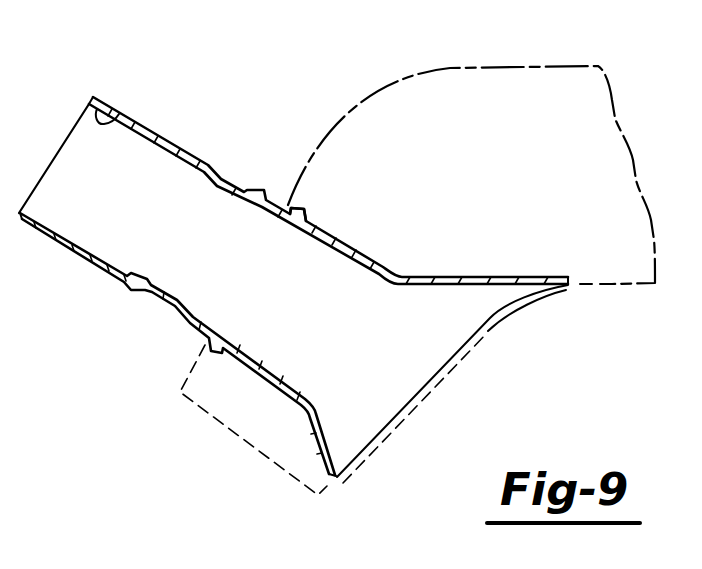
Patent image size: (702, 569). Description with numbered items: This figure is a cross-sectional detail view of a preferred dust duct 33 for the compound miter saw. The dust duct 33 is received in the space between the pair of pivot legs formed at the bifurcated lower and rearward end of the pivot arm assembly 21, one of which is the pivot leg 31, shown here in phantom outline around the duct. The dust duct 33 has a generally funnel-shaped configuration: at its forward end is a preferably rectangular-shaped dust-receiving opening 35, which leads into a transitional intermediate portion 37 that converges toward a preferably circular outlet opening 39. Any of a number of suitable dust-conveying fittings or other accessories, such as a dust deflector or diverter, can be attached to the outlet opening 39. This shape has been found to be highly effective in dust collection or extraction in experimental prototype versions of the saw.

The pivot arm assembly 21 is at (452, 68).
The pivot leg 31 is at (248, 427).
The dust duct 33 is at (358, 252).
The dust-receiving opening 35 is at (433, 377).
The transitional intermediate portion 37 is at (324, 230).
The outlet opening 39 is at (119, 114).